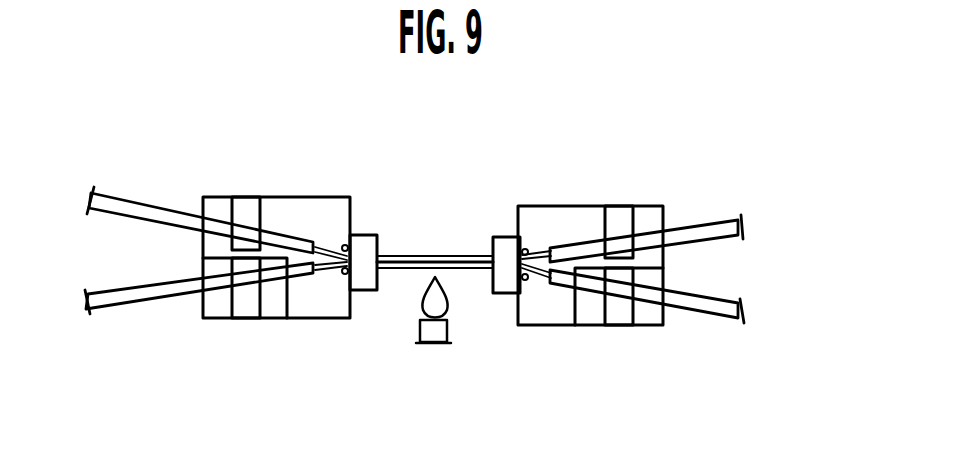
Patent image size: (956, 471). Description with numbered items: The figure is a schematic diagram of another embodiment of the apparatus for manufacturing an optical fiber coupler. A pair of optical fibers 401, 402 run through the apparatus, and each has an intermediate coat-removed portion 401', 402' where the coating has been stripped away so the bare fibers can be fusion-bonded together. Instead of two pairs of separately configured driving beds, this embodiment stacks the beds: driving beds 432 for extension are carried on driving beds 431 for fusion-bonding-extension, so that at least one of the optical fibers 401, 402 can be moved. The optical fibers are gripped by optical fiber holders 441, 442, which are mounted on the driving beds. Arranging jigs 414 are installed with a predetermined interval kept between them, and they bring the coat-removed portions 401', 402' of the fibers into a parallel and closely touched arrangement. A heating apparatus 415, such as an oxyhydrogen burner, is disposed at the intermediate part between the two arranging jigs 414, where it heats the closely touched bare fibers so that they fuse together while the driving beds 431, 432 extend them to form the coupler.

The optical fiber 401 is at (418, 190).
The optical fiber 402 is at (430, 349).
The intermediate coat-removed portion 401' is at (428, 193).
The intermediate coat-removed portion 402' is at (458, 323).
The arranging jig 414 is at (507, 237).
The heating apparatus 415 is at (435, 346).
The driving bed for fusion-bonding-extension 431 is at (322, 161).
The driving bed for extension 432 is at (208, 319).
The optical fiber holder 441 is at (247, 198).
The optical fiber holder 442 is at (253, 304).